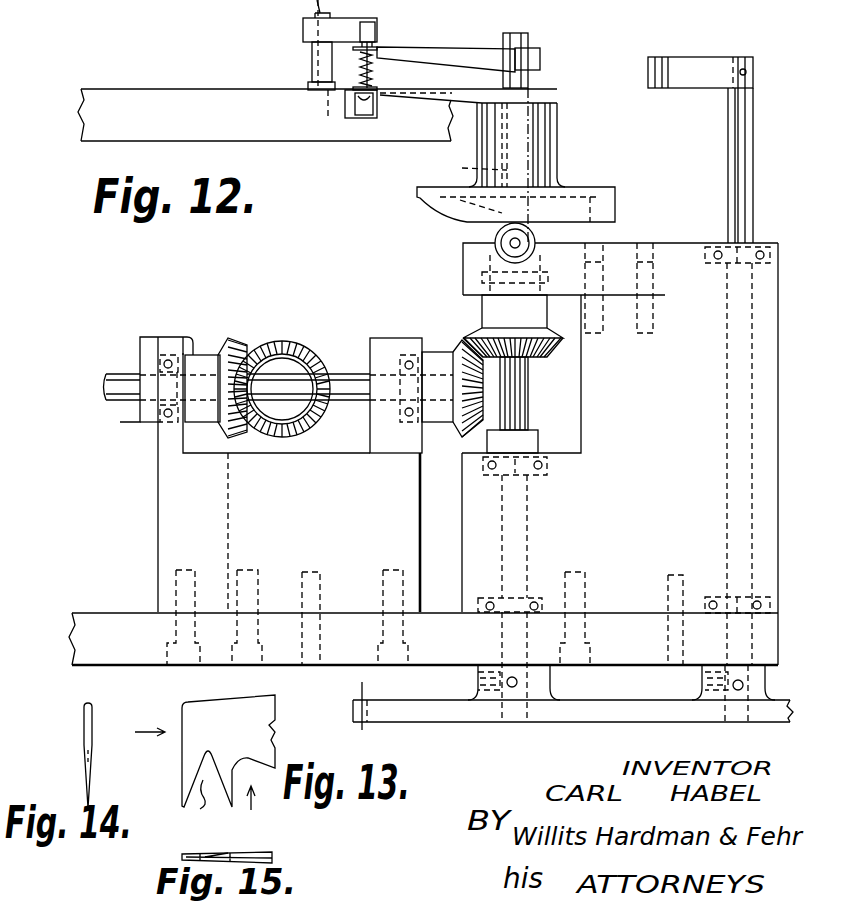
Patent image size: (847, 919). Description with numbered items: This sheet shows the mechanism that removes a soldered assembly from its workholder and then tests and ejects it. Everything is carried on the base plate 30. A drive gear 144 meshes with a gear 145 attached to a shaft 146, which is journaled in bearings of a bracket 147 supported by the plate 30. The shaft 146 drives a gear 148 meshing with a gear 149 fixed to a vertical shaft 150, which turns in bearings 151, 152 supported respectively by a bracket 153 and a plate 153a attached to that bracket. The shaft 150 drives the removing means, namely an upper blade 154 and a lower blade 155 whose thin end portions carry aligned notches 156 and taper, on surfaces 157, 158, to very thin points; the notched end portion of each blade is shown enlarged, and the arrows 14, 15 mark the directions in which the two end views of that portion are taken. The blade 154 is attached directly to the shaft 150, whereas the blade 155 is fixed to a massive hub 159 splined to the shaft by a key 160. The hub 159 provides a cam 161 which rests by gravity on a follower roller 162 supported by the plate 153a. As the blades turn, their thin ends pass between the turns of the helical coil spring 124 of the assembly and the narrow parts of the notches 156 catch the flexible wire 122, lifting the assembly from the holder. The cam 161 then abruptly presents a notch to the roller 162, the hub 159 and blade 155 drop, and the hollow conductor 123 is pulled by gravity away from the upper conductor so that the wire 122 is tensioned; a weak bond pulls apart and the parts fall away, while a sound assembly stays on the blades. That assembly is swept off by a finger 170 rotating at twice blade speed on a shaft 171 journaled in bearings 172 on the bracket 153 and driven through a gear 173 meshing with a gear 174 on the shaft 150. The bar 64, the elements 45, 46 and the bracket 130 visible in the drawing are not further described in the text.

In FIG. 12, the plate 30 is at (117, 627).
In FIG. 12, the drive shaft 45 is at (122, 376).
In FIG. 12, the bearing block 46 is at (160, 336).
In FIG. 12, the bar 64 is at (170, 98).
In FIG. 12, the flexible wire 122 is at (377, 78).
In FIG. 12, the hollow conductor 123 is at (362, 107).
In FIG. 12, the helical coil spring 124 is at (366, 62).
In FIG. 12, the bracket 130 is at (343, 23).
In FIG. 12, the gear 144 is at (285, 341).
In FIG. 12, the gear 145 is at (232, 340).
In FIG. 12, the shaft 146 is at (342, 380).
In FIG. 12, the bracket 147 is at (158, 492).
In FIG. 12, the gear 148 is at (462, 352).
In FIG. 12, the gear 149 is at (548, 345).
In FIG. 12, the shaft 150 is at (536, 33).
In FIG. 12, the bearing 151 is at (548, 466).
In FIG. 12, the bearing 152 is at (535, 280).
In FIG. 12, the bracket 153 is at (705, 247).
In FIG. 12, the plate 153a is at (628, 252).
In FIG. 12, the upper blade 154 is at (455, 49).
In FIG. 12, the lower blade 155 is at (446, 104).
In FIG. 13, the notch 156 is at (228, 764).
In FIG. 14, the tapering surface 157 is at (83, 781).
In FIG. 15, the tapering surface 157 is at (190, 857).
In FIG. 13, the tapering surface 158 is at (183, 796).
In FIG. 14, the tapering surface 158 is at (93, 780).
In FIG. 15, the tapering surface 158 is at (225, 853).
In FIG. 12, the massive hub 159 is at (553, 133).
In FIG. 12, the key 160 is at (467, 165).
In FIG. 12, the cam 161 is at (615, 196).
In FIG. 12, the follower roller 162 is at (495, 238).
In FIG. 12, the finger 170 is at (700, 63).
In FIG. 12, the shaft 171 is at (753, 126).
In FIG. 12, the bearing 172 is at (713, 263).
In FIG. 12, the gear 173 is at (710, 718).
In FIG. 12, the gear 174 is at (463, 705).
In FIG. 13, the arrow 14 is at (149, 721).
In FIG. 13, the arrow 15 is at (262, 808).